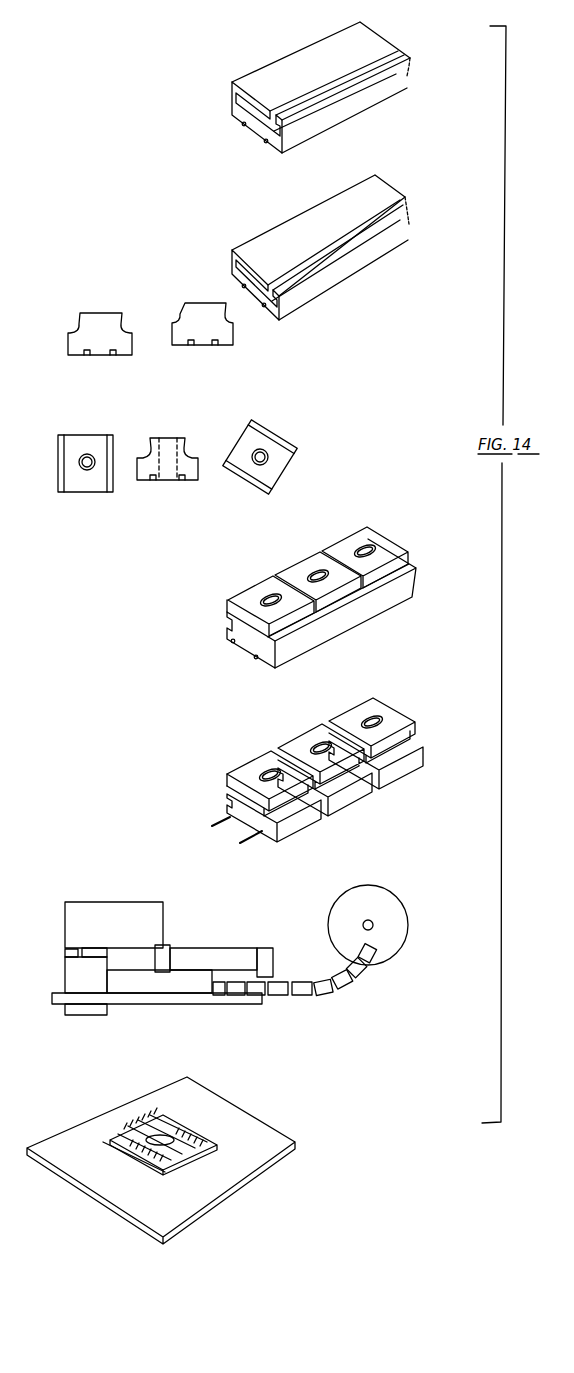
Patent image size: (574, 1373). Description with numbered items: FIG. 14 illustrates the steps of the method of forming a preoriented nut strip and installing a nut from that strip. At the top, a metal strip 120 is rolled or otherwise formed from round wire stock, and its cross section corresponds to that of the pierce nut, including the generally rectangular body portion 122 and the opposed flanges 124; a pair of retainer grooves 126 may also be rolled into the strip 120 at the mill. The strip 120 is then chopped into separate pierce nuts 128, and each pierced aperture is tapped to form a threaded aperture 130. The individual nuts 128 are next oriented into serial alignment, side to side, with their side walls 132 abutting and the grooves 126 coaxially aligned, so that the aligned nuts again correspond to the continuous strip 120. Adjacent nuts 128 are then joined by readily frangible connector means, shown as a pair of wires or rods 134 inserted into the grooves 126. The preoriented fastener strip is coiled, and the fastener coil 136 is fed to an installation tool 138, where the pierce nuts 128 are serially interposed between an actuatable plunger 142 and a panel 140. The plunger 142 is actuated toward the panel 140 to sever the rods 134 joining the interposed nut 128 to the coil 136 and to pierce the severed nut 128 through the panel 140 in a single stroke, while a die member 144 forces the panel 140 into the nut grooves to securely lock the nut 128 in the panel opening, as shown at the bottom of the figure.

The strip 120 is at (244, 76).
The rectangular body portion 122 is at (363, 48).
The opposed flanges 124 is at (346, 89).
The retainer grooves 126 is at (244, 127).
The pierce nuts 128 is at (185, 303).
The threaded aperture 130 is at (87, 465).
The side walls 132 is at (242, 628).
The wires or rods 134 is at (245, 842).
The fastener coil 136 is at (385, 893).
The installation tool 138 is at (72, 900).
The panel 140 is at (52, 998).
The actuatable plunger 142 is at (80, 952).
The die member 144 is at (105, 1010).